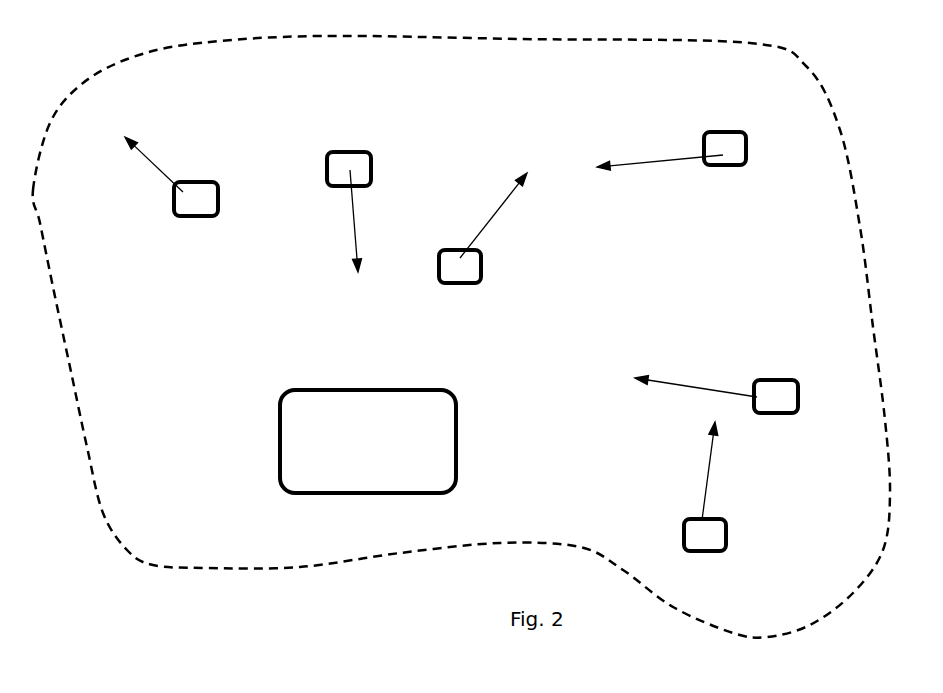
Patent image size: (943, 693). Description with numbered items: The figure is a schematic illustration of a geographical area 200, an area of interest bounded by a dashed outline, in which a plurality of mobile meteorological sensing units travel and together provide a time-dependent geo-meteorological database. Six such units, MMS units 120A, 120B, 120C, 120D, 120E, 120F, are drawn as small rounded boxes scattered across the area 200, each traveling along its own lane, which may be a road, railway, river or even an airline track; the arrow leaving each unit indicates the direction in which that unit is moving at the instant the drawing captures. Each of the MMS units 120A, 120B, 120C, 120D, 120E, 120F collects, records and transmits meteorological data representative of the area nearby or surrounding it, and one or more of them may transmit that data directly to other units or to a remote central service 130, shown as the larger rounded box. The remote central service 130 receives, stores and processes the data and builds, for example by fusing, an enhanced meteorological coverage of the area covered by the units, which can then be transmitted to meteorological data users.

The geographical area 200 is at (171, 385).
The MMS unit 120A is at (198, 180).
The MMS unit 120B is at (345, 152).
The MMS unit 120C is at (453, 273).
The MMS unit 120D is at (732, 163).
The MMS unit 120E is at (774, 405).
The MMS unit 120F is at (707, 540).
The remote central service 130 is at (353, 468).